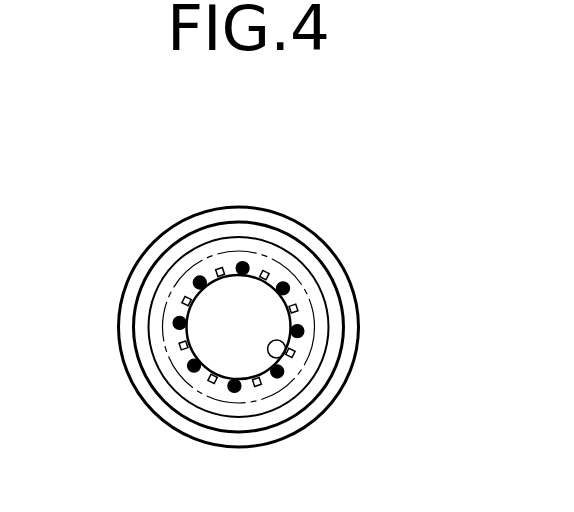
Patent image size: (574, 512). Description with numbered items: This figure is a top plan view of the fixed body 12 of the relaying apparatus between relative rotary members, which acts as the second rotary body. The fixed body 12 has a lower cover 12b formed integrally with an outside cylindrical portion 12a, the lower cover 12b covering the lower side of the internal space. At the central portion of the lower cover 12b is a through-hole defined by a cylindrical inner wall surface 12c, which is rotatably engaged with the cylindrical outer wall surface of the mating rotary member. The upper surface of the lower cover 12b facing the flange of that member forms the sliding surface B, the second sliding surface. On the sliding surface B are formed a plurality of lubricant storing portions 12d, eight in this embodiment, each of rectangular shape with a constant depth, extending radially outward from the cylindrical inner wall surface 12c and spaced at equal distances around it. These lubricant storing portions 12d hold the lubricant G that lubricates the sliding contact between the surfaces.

The fixed body 12 is at (360, 226).
The outside cylindrical portion 12a is at (299, 221).
The lower cover 12b is at (173, 255).
The cylindrical inner wall surface 12c is at (285, 356).
The lubricant storing portion 12d is at (257, 387).
The sliding surface B is at (170, 310).
The lubricant G is at (300, 330).